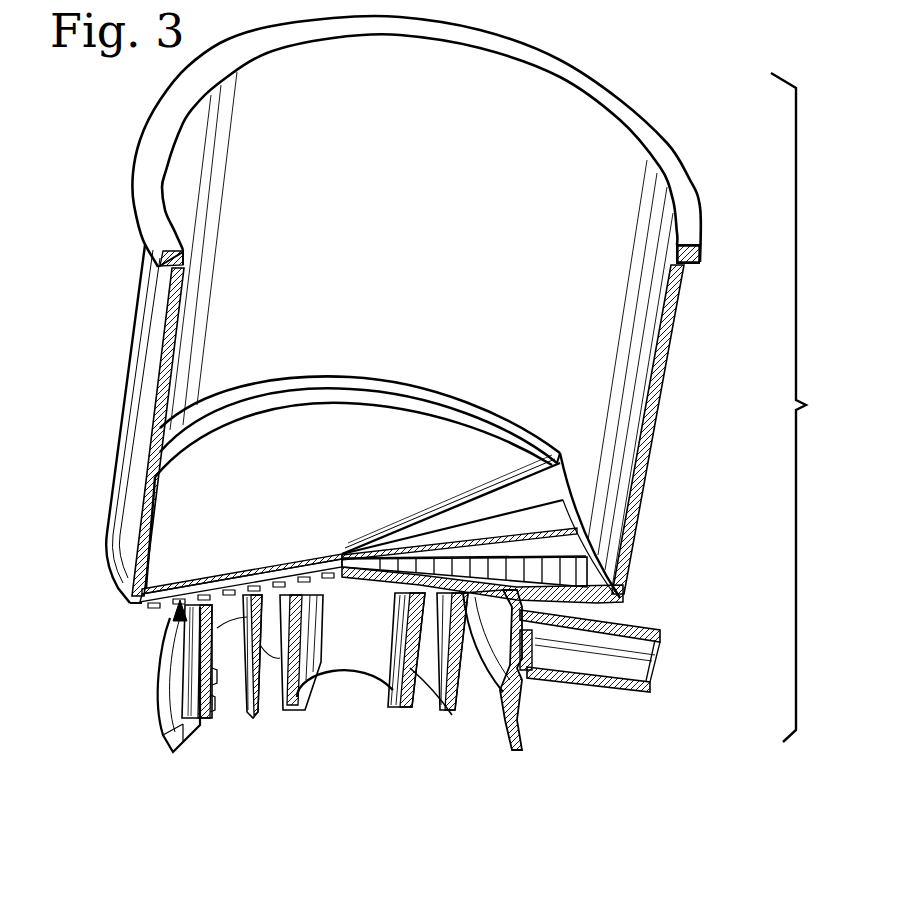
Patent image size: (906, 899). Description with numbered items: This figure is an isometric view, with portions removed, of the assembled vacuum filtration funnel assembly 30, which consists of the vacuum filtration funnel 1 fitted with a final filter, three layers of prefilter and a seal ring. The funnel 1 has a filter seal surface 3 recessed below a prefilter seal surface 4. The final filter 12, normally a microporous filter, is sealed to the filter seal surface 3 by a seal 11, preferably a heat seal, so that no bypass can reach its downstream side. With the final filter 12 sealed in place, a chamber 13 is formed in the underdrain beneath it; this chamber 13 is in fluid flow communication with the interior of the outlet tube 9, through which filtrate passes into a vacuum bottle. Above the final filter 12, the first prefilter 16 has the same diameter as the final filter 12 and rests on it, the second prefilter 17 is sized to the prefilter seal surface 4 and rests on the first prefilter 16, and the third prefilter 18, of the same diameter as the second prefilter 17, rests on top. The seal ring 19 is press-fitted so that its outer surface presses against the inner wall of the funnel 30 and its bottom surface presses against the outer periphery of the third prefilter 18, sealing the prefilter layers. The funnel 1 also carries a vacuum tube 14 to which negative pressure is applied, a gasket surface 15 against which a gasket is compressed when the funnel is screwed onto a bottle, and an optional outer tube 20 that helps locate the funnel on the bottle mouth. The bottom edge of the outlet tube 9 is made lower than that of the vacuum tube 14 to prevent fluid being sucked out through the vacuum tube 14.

The vacuum filtration funnel 1 is at (667, 353).
The filter seal surface 3 is at (582, 583).
The prefilter seal surface 4 is at (600, 547).
The outlet tube 9 is at (293, 702).
The seal 11 is at (600, 520).
The final filter 12 is at (505, 560).
The chamber 13 is at (178, 618).
The vacuum tube 14 is at (618, 683).
The gasket surface 15 is at (190, 735).
The first prefilter 16 is at (557, 517).
The second prefilter 17 is at (557, 483).
The third prefilter 18 is at (370, 455).
The seal ring 19 is at (441, 397).
The outer tube 20 is at (437, 705).
The vacuum filtration funnel assembly 30 is at (809, 407).